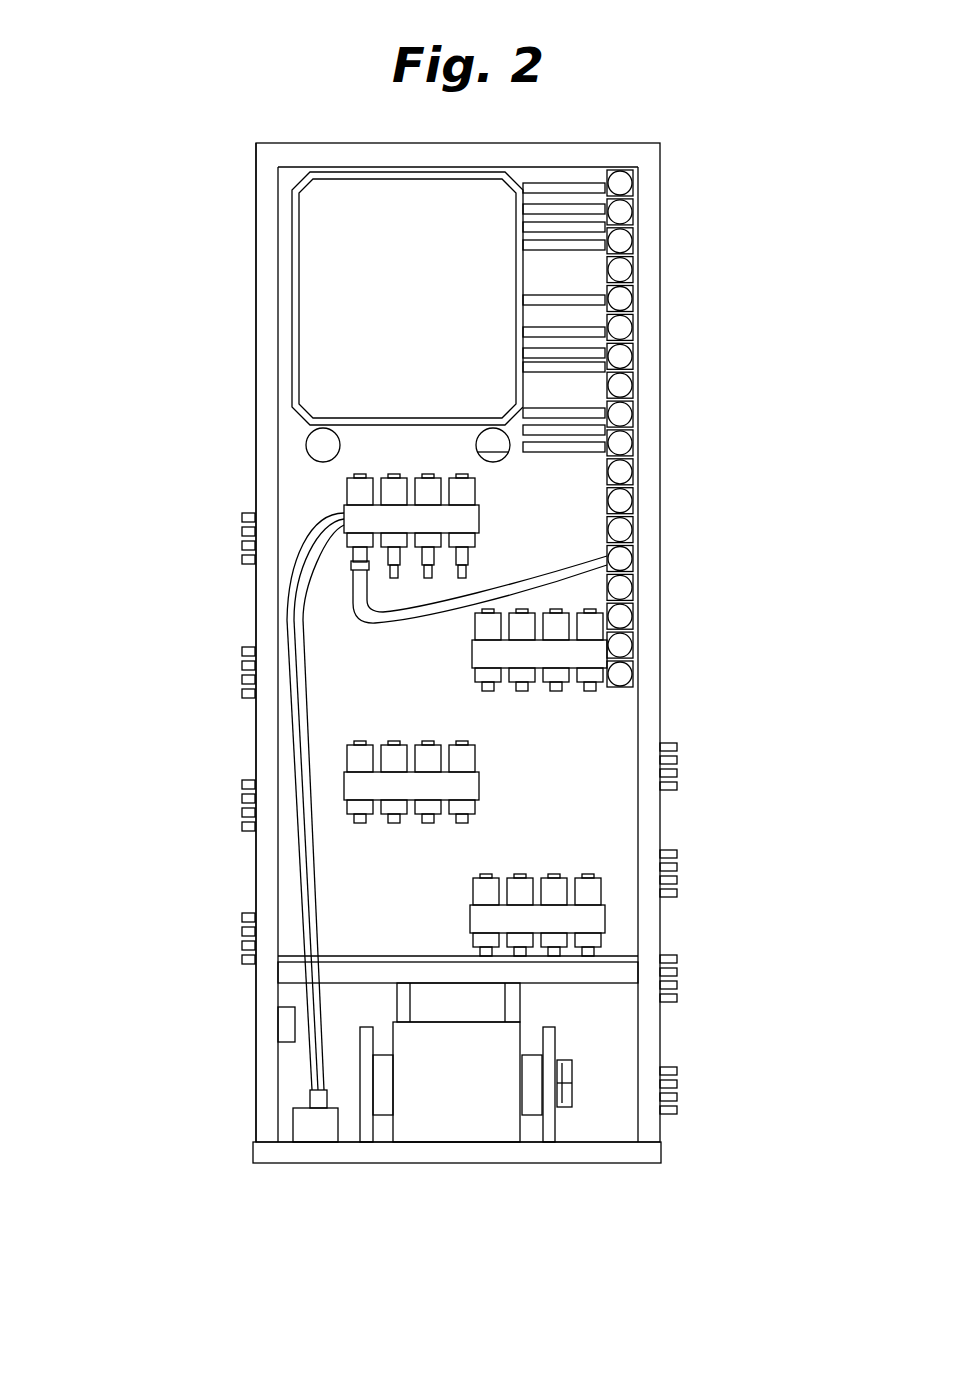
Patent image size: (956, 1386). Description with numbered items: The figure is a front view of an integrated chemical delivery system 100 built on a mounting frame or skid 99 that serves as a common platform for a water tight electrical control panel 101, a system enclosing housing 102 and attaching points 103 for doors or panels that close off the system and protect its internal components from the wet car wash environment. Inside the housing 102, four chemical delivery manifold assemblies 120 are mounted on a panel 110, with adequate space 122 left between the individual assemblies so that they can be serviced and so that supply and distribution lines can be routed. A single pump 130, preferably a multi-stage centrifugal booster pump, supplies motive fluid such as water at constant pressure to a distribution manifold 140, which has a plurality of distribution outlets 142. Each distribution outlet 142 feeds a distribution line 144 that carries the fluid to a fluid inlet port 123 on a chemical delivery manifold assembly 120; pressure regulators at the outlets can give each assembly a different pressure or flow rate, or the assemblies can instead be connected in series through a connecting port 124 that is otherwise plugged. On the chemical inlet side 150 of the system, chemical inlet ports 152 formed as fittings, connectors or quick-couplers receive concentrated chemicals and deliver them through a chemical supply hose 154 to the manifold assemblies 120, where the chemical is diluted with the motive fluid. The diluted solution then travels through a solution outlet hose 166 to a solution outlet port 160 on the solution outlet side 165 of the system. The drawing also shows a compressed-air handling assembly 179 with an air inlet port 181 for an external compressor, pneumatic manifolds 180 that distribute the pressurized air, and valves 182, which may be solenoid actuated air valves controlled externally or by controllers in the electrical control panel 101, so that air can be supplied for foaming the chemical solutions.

The mounting frame or skid 99 is at (567, 1167).
The integrated chemical delivery system 100 is at (195, 146).
The water tight electrical control panel 101 is at (387, 273).
The system enclosing housing 102 is at (660, 1033).
The attaching points 103 is at (280, 1022).
The panel 110 is at (597, 740).
The chemical delivery manifold assembly 120 is at (470, 648).
The space 122 is at (477, 633).
The fluid inlet port 123 is at (340, 497).
The connecting port 124 is at (480, 512).
The pump 130 is at (453, 1103).
The distribution manifold 140 is at (315, 1125).
The distribution outlet 142 is at (308, 1097).
The distribution line 144 is at (303, 868).
The chemical inlet side 150 is at (198, 585).
The chemical inlet port 152 is at (240, 547).
The chemical supply hose 154 is at (295, 514).
The solution outlet port 160 is at (677, 890).
The solution outlet side 165 is at (699, 399).
The solution outlet hose 166 is at (607, 652).
The compressed-air handling assembly 179 is at (540, 188).
The pneumatic manifold 180 is at (577, 210).
The air inlet port 181 is at (674, 399).
The valve 182 is at (618, 213).